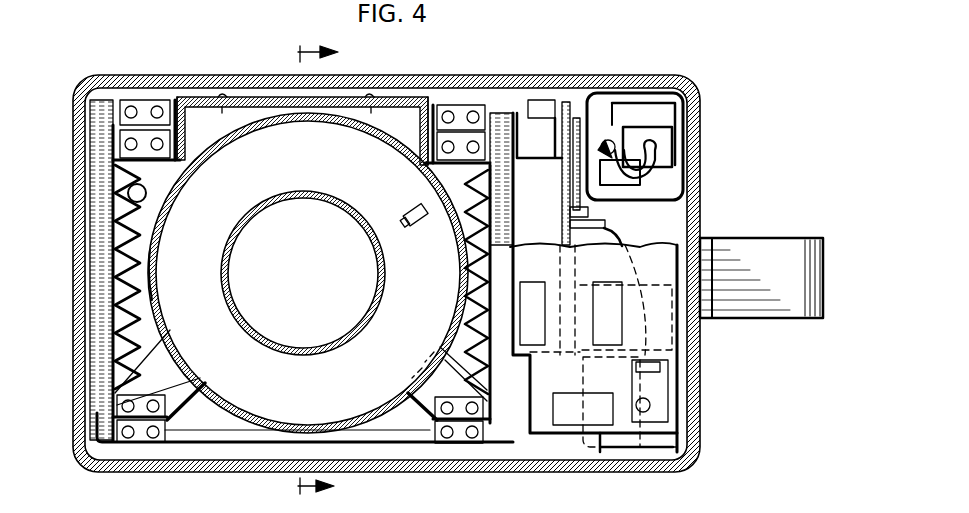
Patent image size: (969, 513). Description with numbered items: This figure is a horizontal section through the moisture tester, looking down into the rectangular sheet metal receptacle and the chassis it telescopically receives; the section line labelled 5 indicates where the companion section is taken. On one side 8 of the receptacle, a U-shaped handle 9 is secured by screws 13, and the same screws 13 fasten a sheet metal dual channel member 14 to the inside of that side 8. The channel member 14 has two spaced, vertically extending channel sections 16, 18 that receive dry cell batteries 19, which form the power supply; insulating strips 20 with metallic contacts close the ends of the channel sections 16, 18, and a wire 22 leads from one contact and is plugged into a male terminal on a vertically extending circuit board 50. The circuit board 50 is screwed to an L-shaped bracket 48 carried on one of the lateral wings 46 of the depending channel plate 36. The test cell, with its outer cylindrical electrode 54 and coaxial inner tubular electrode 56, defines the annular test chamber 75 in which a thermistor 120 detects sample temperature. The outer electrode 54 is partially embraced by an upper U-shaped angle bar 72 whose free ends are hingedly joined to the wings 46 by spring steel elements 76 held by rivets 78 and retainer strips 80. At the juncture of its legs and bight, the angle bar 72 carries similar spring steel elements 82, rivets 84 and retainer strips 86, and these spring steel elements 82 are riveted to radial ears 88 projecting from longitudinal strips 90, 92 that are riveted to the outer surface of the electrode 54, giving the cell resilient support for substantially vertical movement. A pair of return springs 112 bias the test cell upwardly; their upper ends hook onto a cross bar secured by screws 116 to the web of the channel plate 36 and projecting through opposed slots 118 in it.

The section line 5- 5 is at (324, 258).
The side 8 is at (700, 168).
The U-shaped handle 9 is at (806, 238).
The screws 13 is at (706, 240).
The dual channel member 14 is at (700, 335).
The channel section 16 is at (655, 93).
The channel section 18 is at (680, 440).
The dry cell batteries 19 is at (608, 93).
The insulating strips 20 is at (662, 115).
The wire 22 is at (627, 232).
The channel plate 36 is at (257, 97).
The lateral wings 46 is at (181, 188).
The L-shaped bracket 48 is at (575, 118).
The circuit board 50 is at (562, 182).
The outer cylindrical electrode 54 is at (156, 285).
The inner tubular cylindrical electrode 56 is at (317, 353).
The upper U-shaped angle bar 72 is at (215, 433).
The annular test chamber 75 is at (293, 400).
The spring steel elements 76 is at (118, 128).
The rivets 78 is at (157, 106).
The retainer strips 80 is at (128, 108).
The spring steel elements 82 is at (165, 443).
The rivets 84 is at (120, 404).
The retainer strips 86 is at (112, 432).
The radial ears 88 is at (178, 363).
The longitudinal strip 90 is at (208, 378).
The longitudinal strip 92 is at (424, 347).
The return springs 112 is at (134, 337).
The screws 116 is at (222, 96).
The slots 118 is at (181, 97).
The thermistor 120 is at (405, 226).